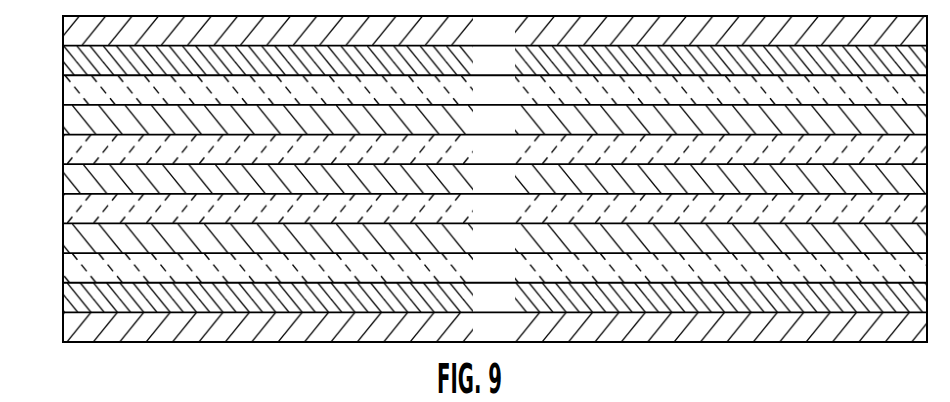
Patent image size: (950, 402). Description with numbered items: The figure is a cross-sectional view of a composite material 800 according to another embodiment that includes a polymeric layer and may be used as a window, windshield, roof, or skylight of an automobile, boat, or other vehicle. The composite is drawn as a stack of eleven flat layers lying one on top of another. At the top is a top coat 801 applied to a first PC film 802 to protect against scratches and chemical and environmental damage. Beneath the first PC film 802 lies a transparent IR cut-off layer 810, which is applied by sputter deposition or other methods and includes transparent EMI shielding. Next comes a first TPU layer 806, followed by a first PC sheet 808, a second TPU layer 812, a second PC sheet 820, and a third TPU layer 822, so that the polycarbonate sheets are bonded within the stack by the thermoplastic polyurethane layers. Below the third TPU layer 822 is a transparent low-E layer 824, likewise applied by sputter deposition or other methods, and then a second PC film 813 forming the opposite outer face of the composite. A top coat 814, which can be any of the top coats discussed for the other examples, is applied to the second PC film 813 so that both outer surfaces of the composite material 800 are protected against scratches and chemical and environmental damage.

The composite material 800 is at (46, 132).
The top coat 801 is at (512, 44).
The first PC film 802 is at (512, 73).
The transparent IR cut-off layer 810 is at (512, 103).
The first TPU layer 806 is at (512, 132).
The first PC sheet 808 is at (512, 162).
The second TPU layer 812 is at (512, 192).
The second PC sheet 820 is at (512, 221).
The third TPU layer 822 is at (512, 251).
The transparent low-E layer 824 is at (512, 281).
The second PC film 813 is at (512, 310).
The top coat 814 is at (512, 340).